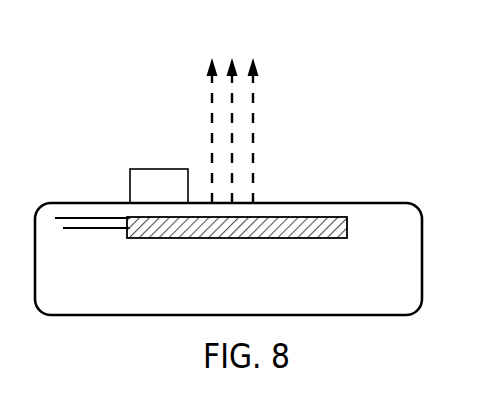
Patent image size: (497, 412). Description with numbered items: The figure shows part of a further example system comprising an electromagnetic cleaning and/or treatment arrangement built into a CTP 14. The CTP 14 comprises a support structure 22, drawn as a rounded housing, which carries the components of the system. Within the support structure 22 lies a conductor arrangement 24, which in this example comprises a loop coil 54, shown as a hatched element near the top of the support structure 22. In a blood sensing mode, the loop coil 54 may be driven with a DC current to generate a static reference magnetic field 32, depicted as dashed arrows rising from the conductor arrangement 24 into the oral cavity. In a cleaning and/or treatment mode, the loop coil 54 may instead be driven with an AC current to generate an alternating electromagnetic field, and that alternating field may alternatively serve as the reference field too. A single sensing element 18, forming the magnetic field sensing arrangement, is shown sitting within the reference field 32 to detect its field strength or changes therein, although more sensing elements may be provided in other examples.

The CTP 14 is at (211, 259).
The magnetic field sensing arrangement 18 is at (147, 169).
The support structure 22 is at (76, 203).
The conductor arrangement 24 is at (302, 190).
The static reference magnetic field 32 is at (268, 125).
The loop coil 54 is at (328, 229).